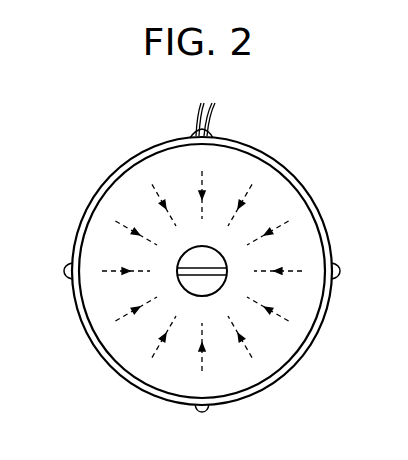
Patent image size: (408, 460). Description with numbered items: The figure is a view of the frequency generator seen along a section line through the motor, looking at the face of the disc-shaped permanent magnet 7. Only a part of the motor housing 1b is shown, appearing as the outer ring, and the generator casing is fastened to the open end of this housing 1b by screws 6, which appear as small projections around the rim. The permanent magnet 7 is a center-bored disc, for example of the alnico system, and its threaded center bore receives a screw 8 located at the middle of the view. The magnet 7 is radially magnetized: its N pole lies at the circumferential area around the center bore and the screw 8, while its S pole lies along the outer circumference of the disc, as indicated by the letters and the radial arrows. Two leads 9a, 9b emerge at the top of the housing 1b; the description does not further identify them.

The motor housing 1b is at (268, 160).
The screws 6 is at (212, 137).
The permanent magnet 7 is at (278, 347).
The screw 8 is at (207, 296).
The lead wire 9a is at (197, 108).
The lead wire 9b is at (212, 110).